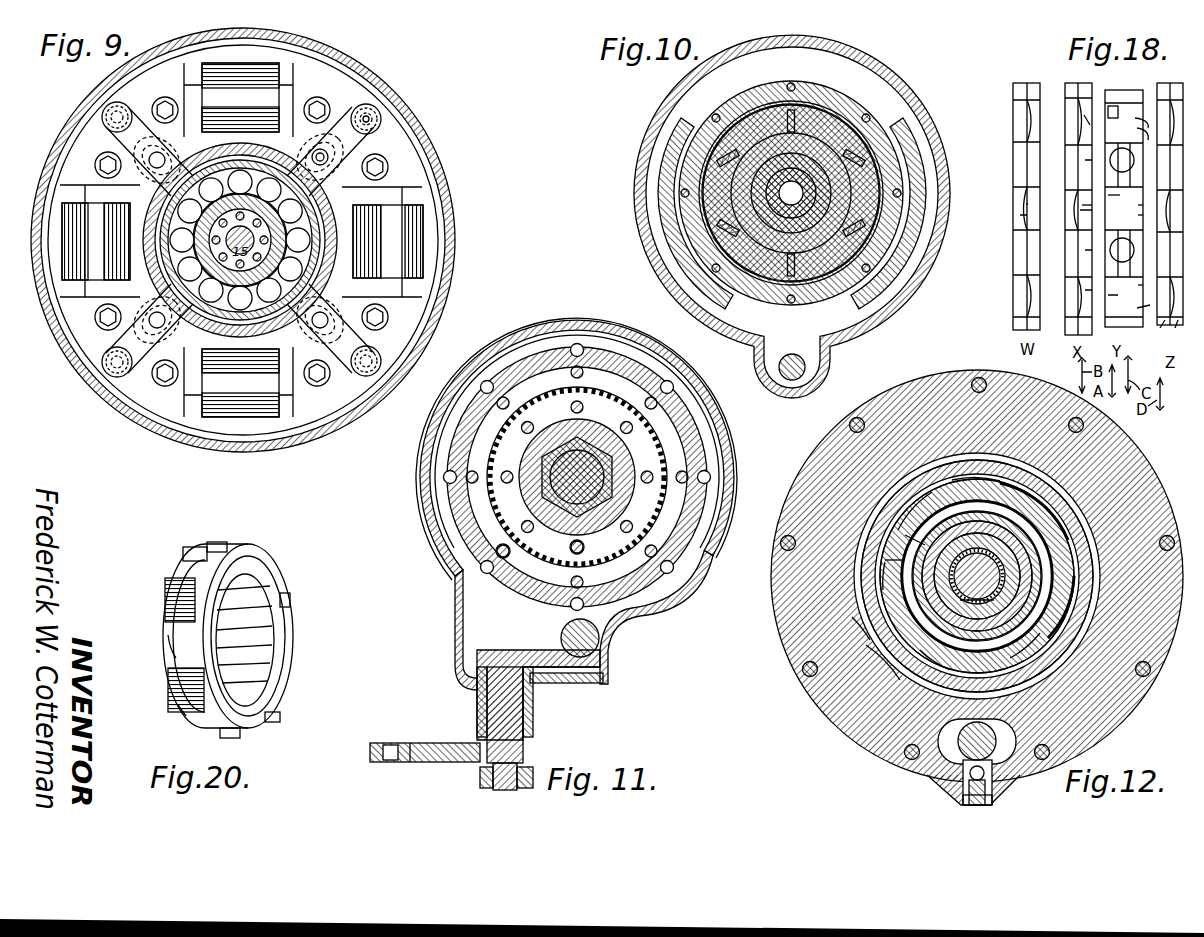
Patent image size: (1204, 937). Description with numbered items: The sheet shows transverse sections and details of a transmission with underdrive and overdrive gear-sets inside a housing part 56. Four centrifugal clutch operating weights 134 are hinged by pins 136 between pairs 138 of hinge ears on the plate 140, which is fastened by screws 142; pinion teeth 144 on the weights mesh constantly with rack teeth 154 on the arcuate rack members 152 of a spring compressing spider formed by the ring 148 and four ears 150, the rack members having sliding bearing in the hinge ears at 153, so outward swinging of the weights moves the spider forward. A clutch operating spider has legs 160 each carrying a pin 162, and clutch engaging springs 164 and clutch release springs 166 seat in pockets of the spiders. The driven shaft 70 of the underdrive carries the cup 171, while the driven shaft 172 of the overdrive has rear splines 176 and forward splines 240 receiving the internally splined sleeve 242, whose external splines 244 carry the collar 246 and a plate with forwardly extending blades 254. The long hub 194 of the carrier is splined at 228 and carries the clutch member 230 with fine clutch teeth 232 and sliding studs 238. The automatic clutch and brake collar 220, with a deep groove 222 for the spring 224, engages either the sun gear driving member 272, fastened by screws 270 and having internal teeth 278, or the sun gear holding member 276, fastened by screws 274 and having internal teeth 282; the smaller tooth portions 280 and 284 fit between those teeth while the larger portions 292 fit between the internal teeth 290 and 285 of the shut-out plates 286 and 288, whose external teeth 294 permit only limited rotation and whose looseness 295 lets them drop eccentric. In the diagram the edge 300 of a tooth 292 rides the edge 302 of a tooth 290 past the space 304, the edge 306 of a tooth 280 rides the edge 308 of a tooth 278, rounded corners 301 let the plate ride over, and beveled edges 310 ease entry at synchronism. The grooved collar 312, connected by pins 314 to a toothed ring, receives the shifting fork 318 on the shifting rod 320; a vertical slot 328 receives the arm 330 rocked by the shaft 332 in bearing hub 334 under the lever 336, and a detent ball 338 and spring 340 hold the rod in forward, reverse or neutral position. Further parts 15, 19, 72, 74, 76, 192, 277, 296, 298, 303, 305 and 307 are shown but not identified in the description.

In FIG. 9, the hub shaft 15 is at (108, 97).
In FIG. 9, the bolt 19 is at (100, 160).
In FIG. 9, the housing part 56 is at (324, 57).
In FIG. 10, the housing part 56 is at (897, 85).
In FIG. 11, the housing part 56 is at (564, 327).
In FIG. 12, the housing part 56 is at (955, 376).
In FIG. 9, the driven shaft of the underdrive gear-set 70 is at (280, 226).
In FIG. 9, the shaft 72 is at (240, 235).
In FIG. 9, the ball 74 is at (240, 240).
In FIG. 9, the outer race 76 is at (240, 240).
In FIG. 9, the centrifugal clutch operating weights 134 is at (232, 420).
In FIG. 9, the pins 136 is at (298, 384).
In FIG. 9, the pairs of hinge ears 138 is at (190, 392).
In FIG. 9, the plate 140 is at (141, 410).
In FIG. 9, the screws 142 is at (106, 320).
In FIG. 9, the pinion teeth 144 is at (260, 372).
In FIG. 9, the ring 148 is at (325, 283).
In FIG. 9, the ears 150 is at (368, 330).
In FIG. 9, the arcuate rack members 152 is at (330, 214).
In FIG. 9, the sliding bearing 153 is at (298, 108).
In FIG. 9, the rack teeth 154 is at (240, 346).
In FIG. 9, the legs 160 is at (343, 150).
In FIG. 9, the pin 162 is at (383, 110).
In FIG. 9, the clutch engaging springs 164 is at (348, 160).
In FIG. 9, the clutch release springs 166 is at (380, 120).
In FIG. 10, the cup 171 is at (866, 142).
In FIG. 10, the driven shaft of the overdrive gear-set 172 is at (791, 193).
In FIG. 11, the driven shaft of the overdrive gear-set 172 is at (577, 477).
In FIG. 12, the driven shaft of the overdrive gear-set 172 is at (977, 576).
In FIG. 12, the splines 176 is at (977, 576).
In FIG. 11, the hub portion 192 is at (577, 477).
In FIG. 11, the long hub of the carrier 194 is at (614, 462).
In FIG. 12, the automatic clutch and brake collar 220 is at (946, 640).
In FIG. 18, the automatic clutch and brake collar 220 is at (1135, 92).
In FIG. 20, the automatic clutch and brake collar 220 is at (178, 728).
In FIG. 12, the deep groove 222 is at (1015, 640).
In FIG. 20, the deep groove 222 is at (234, 570).
In FIG. 12, the spring 224 is at (1041, 586).
In FIG. 11, the external splines 228 is at (577, 477).
In FIG. 11, the clutch member 230 is at (609, 546).
In FIG. 11, the fine clutch teeth 232 is at (566, 562).
In FIG. 11, the studs 238 is at (571, 547).
In FIG. 10, the splines 240 is at (791, 193).
In FIG. 12, the splines 240 is at (1028, 574).
In FIG. 10, the internally splined sleeve 242 is at (794, 207).
In FIG. 10, the external splines 244 is at (791, 193).
In FIG. 10, the internally splined collar 246 is at (791, 193).
In FIG. 10, the forwardly extending blades 254 is at (791, 199).
In FIG. 11, the screws 270 is at (489, 395).
In FIG. 11, the sun gear driving member 272 is at (527, 367).
In FIG. 12, the sun gear driving member 272 is at (1026, 452).
In FIG. 18, the sun gear driving member 272 is at (1018, 83).
In FIG. 12, the screws 274 is at (855, 419).
In FIG. 12, the sun gear holding member 276 is at (1085, 492).
In FIG. 18, the sun gear holding member 276 is at (1170, 84).
In FIG. 12, the disc 277 is at (866, 645).
In FIG. 12, the internal teeth 278 is at (1012, 508).
In FIG. 18, the internal teeth 278 is at (1080, 210).
In FIG. 12, the smaller portions of the teeth 280 is at (898, 565).
In FIG. 18, the smaller portions of the teeth 280 is at (1127, 287).
In FIG. 20, the smaller portions of the teeth 280 is at (178, 705).
In FIG. 18, the internal teeth 282 is at (1175, 328).
In FIG. 12, the smaller portion of the teeth 284 is at (977, 606).
In FIG. 18, the smaller portion of the teeth 284 is at (1124, 240).
In FIG. 20, the smaller portion of the teeth 284 is at (198, 662).
In FIG. 18, the internal teeth 285 is at (1160, 328).
In FIG. 12, the shut-out plate 286 is at (924, 468).
In FIG. 18, the shut-out plate 286 is at (1033, 83).
In FIG. 18, the shut-out plate 288 is at (1140, 92).
In FIG. 12, the internal teeth 290 is at (1006, 472).
In FIG. 18, the internal teeth 290 is at (1085, 160).
In FIG. 12, the larger portions of the teeth 292 is at (887, 543).
In FIG. 18, the larger portions of the teeth 292 is at (1121, 192).
In FIG. 20, the larger portions of the teeth 292 is at (180, 578).
In FIG. 12, the external teeth 294 is at (1052, 572).
In FIG. 12, the looseness 295 is at (852, 617).
In FIG. 12, the ring 296 is at (1095, 508).
In FIG. 12, the lug 298 is at (903, 522).
In FIG. 18, the edge of tooth 300 is at (1125, 151).
In FIG. 18, the rounded corner 301 is at (1127, 203).
In FIG. 12, the edge of tooth 302 is at (915, 506).
In FIG. 18, the edge of tooth 302 is at (1121, 109).
In FIG. 18, the tooth 303 is at (1131, 308).
In FIG. 18, the space 304 is at (1085, 122).
In FIG. 18, the tooth 305 is at (1130, 130).
In FIG. 18, the edge of tooth 306 is at (1127, 213).
In FIG. 18, the notch 307 is at (1129, 119).
In FIG. 18, the edge of tooth 308 is at (1082, 205).
In FIG. 18, the beveled edges 310 is at (1085, 290).
In FIG. 20, the beveled edges 310 is at (165, 648).
In FIG. 10, the grooved collar 312 is at (849, 108).
In FIG. 10, the pins 314 is at (796, 84).
In FIG. 11, the pins 314 is at (502, 545).
In FIG. 10, the shifting fork 318 is at (680, 136).
In FIG. 12, the shifting fork 318 is at (928, 574).
In FIG. 10, the shifting rod 320 is at (791, 357).
In FIG. 11, the shifting rod 320 is at (600, 630).
In FIG. 12, the shifting rod 320 is at (971, 732).
In FIG. 11, the vertical slot 328 is at (557, 652).
In FIG. 11, the arm 330 is at (598, 666).
In FIG. 11, the shaft 332 is at (518, 705).
In FIG. 11, the bearing hub 334 is at (534, 722).
In FIG. 11, the lever 336 is at (436, 760).
In FIG. 12, the detent ball 338 is at (958, 786).
In FIG. 12, the spring 340 is at (992, 788).